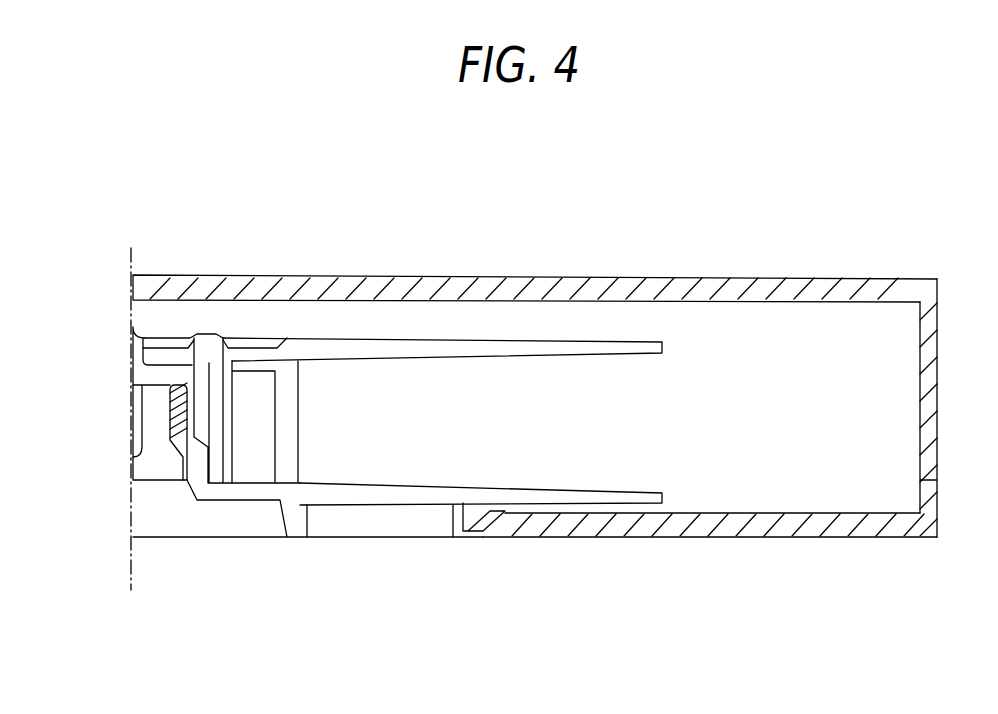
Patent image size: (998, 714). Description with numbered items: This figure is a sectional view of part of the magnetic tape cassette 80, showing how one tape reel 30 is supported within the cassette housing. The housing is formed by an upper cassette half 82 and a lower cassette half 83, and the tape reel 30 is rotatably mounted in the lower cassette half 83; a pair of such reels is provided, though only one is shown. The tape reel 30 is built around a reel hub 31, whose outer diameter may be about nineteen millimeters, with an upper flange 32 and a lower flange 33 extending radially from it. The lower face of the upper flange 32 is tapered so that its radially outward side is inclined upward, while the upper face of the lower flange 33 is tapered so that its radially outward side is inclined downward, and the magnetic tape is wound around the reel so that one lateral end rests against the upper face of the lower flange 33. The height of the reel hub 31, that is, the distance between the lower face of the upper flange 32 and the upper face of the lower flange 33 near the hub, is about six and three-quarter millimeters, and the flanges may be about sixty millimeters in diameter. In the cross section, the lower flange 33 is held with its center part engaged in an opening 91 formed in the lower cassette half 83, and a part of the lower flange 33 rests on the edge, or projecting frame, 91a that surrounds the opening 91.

The magnetic tape cassette 80 is at (772, 158).
The upper cassette half 82 is at (850, 284).
The lower cassette half 83 is at (816, 534).
The tape reel 30 is at (443, 421).
The reel hub 31 is at (300, 443).
The upper flange 32 is at (532, 354).
The lower flange 33 is at (557, 486).
The opening 91 is at (230, 552).
The edge (projecting frame) 91a is at (492, 535).